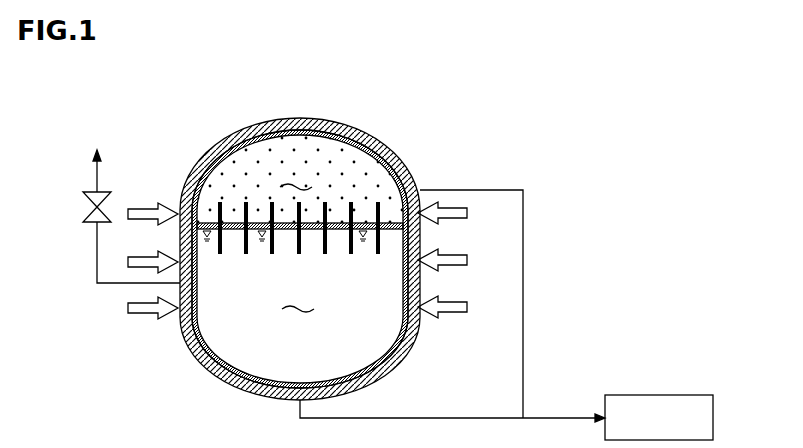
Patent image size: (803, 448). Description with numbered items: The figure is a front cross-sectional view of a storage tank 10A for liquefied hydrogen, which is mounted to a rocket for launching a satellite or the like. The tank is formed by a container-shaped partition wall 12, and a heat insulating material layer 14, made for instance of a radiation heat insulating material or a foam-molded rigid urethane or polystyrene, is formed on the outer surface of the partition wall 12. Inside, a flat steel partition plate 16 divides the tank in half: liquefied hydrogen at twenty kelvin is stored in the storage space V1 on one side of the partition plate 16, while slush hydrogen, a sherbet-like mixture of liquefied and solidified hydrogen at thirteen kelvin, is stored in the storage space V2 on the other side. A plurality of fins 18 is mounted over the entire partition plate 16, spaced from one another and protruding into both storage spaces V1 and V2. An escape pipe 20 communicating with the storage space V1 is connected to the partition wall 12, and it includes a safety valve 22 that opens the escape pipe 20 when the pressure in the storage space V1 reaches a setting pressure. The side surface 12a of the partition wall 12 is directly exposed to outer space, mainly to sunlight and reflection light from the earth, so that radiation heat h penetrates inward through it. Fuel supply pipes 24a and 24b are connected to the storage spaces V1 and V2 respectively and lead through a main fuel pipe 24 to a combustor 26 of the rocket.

The storage tank 10A is at (287, 230).
The partition wall 12 is at (373, 147).
The side surface of the partition wall 12a is at (180, 243).
The heat insulating material layer 14 is at (404, 169).
The partition plate 16 is at (404, 230).
The fins 18 is at (378, 256).
The escape pipe 20 is at (96, 250).
The safety valve 22 is at (88, 193).
The main fuel pipe 24 is at (548, 418).
The fuel supply pipe 24a is at (455, 418).
The fuel supply pipe 24b is at (452, 189).
The combustor 26 is at (652, 395).
The radiation heat h is at (452, 272).
The storage space V1 is at (228, 338).
The storage space V2 is at (218, 190).